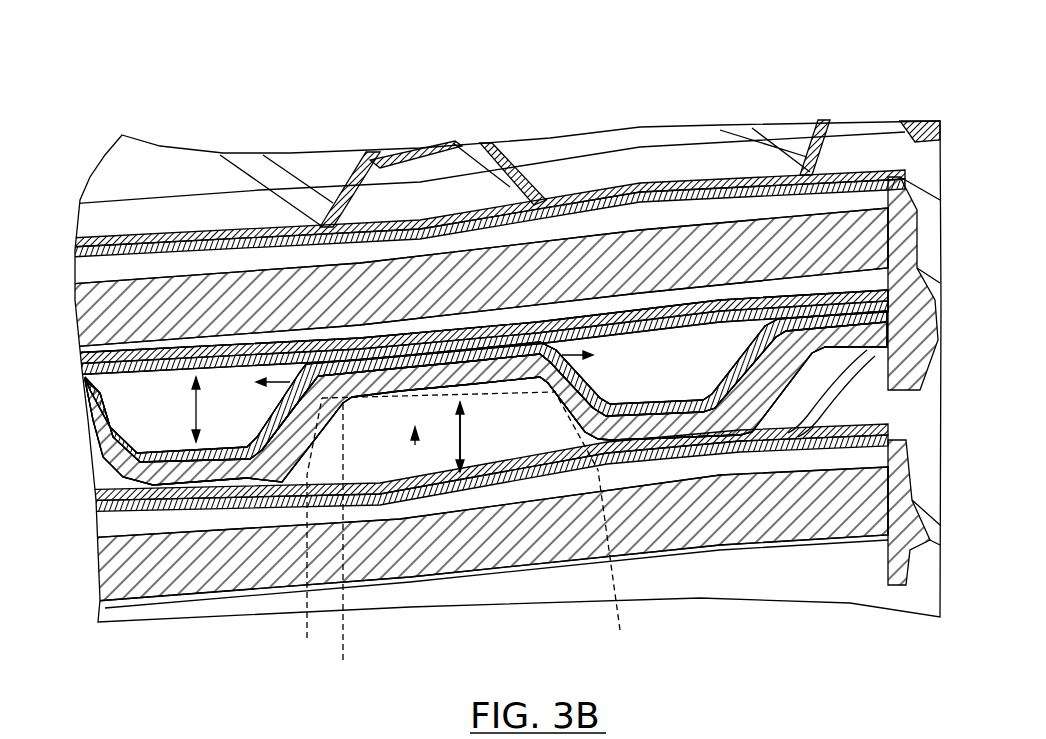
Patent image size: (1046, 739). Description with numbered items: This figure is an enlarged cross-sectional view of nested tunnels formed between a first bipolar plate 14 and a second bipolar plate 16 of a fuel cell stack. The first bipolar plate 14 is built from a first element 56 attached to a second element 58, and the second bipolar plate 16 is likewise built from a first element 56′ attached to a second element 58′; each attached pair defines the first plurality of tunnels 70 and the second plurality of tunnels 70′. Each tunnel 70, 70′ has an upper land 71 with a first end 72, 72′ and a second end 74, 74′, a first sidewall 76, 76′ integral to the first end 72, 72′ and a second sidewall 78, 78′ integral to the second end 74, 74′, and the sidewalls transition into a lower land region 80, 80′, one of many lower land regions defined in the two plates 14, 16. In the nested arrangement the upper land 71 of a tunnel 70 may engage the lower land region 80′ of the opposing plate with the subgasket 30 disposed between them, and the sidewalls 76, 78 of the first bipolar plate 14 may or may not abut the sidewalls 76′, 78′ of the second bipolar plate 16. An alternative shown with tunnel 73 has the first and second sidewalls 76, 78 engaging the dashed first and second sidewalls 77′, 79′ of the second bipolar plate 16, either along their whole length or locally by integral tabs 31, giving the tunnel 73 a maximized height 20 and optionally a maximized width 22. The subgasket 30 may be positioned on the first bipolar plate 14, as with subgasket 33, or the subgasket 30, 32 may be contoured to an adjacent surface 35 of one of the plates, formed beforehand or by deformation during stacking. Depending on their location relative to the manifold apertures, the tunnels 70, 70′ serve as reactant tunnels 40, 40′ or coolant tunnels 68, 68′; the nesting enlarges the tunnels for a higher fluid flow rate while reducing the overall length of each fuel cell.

The first bipolar plate 14 is at (538, 310).
The second bipolar plate 16 is at (828, 455).
The maximized height 20 is at (205, 378).
The maximized width 22 is at (372, 360).
The subgasket 30 is at (800, 237).
The integral tabs 31 is at (895, 298).
The subgasket 32 is at (712, 522).
The subgasket 33 is at (800, 237).
The adjacent surface 35 is at (806, 457).
The reactant tunnels 40 is at (705, 395).
The first element 56 is at (462, 222).
The second element 58 is at (132, 185).
The coolant tunnels 68 is at (705, 395).
The tunnels 70 is at (170, 418).
The upper land 71 is at (689, 380).
The first end 72 is at (737, 385).
The second end 74 is at (592, 400).
The first sidewall 76 is at (272, 380).
The second sidewall 78 is at (568, 392).
The lower land region 80 is at (402, 355).
The alternate corrugated core sheet 40′ is at (462, 472).
The first element 56′ is at (838, 440).
The second element 58′ is at (822, 408).
The coolant tunnels 68′ is at (462, 472).
The tunnels 70′ is at (415, 440).
The first end 72′ is at (446, 428).
The tunnel 73 is at (460, 540).
The second end 74′ is at (494, 385).
The first sidewall 76′ is at (362, 468).
The first sidewall 77′ is at (310, 531).
The second sidewall 78′ is at (553, 398).
The second sidewall 79′ is at (615, 564).
The lower land region 80′ is at (247, 478).